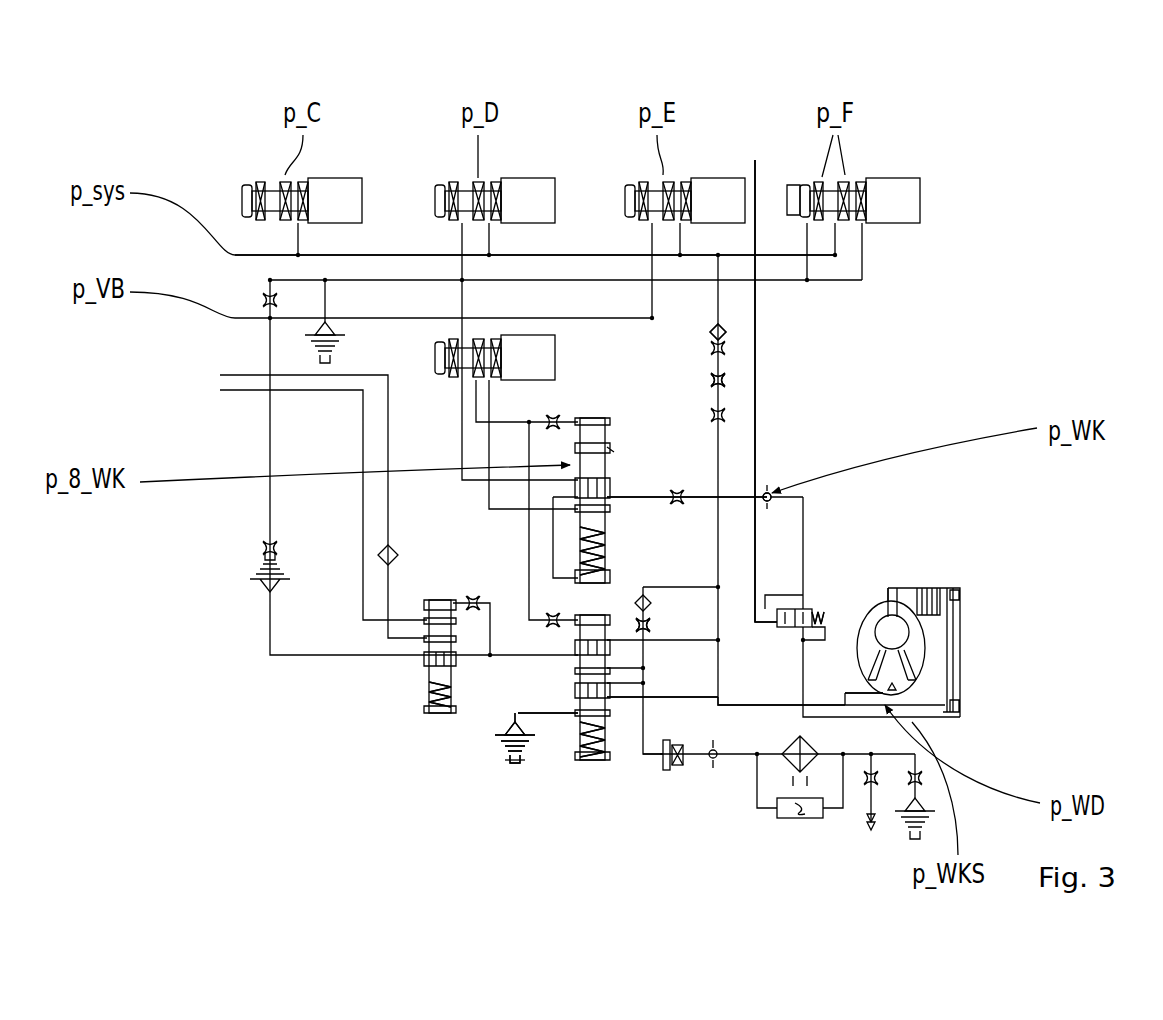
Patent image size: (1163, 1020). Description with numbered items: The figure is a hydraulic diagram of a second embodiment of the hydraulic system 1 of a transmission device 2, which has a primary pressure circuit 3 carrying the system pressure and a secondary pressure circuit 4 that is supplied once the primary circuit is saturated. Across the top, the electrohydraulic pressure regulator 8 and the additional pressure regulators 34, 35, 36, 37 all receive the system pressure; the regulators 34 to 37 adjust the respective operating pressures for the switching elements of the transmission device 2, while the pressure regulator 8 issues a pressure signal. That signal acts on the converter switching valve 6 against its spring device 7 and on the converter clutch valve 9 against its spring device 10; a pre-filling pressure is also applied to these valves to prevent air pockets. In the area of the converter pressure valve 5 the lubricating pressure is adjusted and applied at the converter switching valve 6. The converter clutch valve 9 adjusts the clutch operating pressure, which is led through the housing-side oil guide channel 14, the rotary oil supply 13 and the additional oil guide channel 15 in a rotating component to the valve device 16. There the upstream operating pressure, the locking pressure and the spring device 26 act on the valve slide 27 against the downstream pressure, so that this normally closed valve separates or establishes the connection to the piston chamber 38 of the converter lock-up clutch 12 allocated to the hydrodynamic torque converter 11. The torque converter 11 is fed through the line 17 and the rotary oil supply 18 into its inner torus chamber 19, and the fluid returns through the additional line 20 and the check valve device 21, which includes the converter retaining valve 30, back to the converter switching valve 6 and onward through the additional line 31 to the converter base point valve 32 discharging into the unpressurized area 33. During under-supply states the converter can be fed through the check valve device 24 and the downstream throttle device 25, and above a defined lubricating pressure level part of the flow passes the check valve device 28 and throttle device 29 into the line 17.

The hydraulic system 1 is at (207, 172).
The transmission device 2 is at (978, 230).
The primary pressure circuit 3 is at (577, 392).
The secondary pressure circuit 4 is at (408, 712).
The converter pressure valve 5 is at (417, 673).
The converter switching valve 6 is at (595, 770).
The spring device 7 is at (580, 767).
The electrohydraulic pressure regulator 8 is at (430, 363).
The converter clutch valve 9 is at (505, 428).
The spring device 10 is at (577, 547).
The hydrodynamic torque converter 11 is at (930, 637).
The converter lock-up clutch 12 is at (963, 657).
The rotary oil supply 13 is at (772, 485).
The oil guide channel 14 is at (695, 490).
The additional oil guide channel 15 is at (800, 592).
The valve device 16 is at (820, 597).
The line 17 is at (722, 672).
The rotary oil supply 18 is at (800, 720).
The inner torus chamber 19 is at (925, 660).
The additional line 20 is at (698, 700).
The check valve device 21 is at (665, 782).
The valve device 24 is at (730, 333).
The throttle device 25 is at (730, 378).
The spring device 26 is at (830, 613).
The valve slide 27 is at (768, 700).
The check valve device 28 is at (635, 603).
The throttle device 29 is at (635, 625).
The converter retaining valve 30 is at (660, 768).
The additional line 31 is at (522, 706).
The converter base point valve 32 is at (497, 752).
The unpressurized area 33 is at (517, 773).
The pressure regulator 34 is at (348, 180).
The pressure regulator 35 is at (528, 178).
The pressure regulator 36 is at (707, 175).
The pressure regulator 37 is at (888, 180).
The piston chamber 38 is at (912, 688).